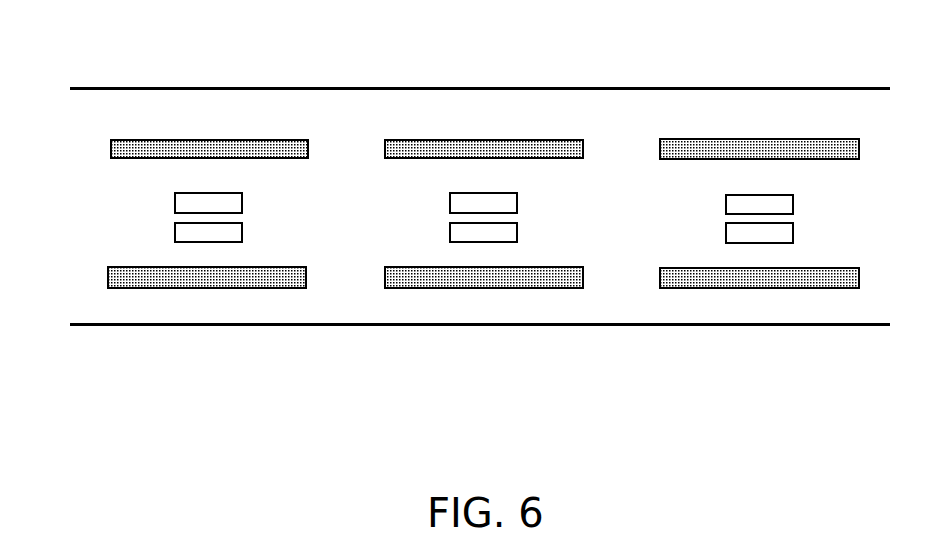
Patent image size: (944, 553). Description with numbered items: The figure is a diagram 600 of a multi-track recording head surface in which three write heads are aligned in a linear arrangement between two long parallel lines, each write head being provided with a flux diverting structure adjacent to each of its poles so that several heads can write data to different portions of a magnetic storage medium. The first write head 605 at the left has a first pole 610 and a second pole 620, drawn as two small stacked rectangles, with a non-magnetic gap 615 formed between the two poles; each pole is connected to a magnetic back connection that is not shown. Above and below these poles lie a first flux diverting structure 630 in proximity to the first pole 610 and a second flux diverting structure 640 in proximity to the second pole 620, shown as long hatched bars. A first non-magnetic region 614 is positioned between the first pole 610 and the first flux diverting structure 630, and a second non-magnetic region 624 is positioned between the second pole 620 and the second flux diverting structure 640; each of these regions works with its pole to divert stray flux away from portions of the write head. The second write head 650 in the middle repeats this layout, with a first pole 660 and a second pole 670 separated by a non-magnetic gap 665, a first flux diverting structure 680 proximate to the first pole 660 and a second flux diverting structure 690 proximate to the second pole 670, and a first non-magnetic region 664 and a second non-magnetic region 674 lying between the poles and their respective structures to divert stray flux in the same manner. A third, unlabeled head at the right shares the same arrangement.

The diagram of multi-track recording head surface 600 is at (748, 406).
The first write head 605 is at (209, 118).
The second write head 650 is at (478, 117).
The first flux diverting structure 630 is at (111, 149).
The first non-magnetic region 614 is at (170, 178).
The first pole 610 is at (173, 203).
The non-magnetic gap 615 is at (172, 219).
The second pole 620 is at (173, 233).
The second non-magnetic region 624 is at (172, 256).
The second flux diverting structure 640 is at (108, 277).
The first flux diverting structure 680 is at (385, 148).
The first non-magnetic region 664 is at (450, 176).
The first pole 660 is at (450, 203).
The non-magnetic gap 665 is at (450, 219).
The second pole 670 is at (450, 233).
The second non-magnetic region 674 is at (450, 256).
The second flux diverting structure 690 is at (386, 277).